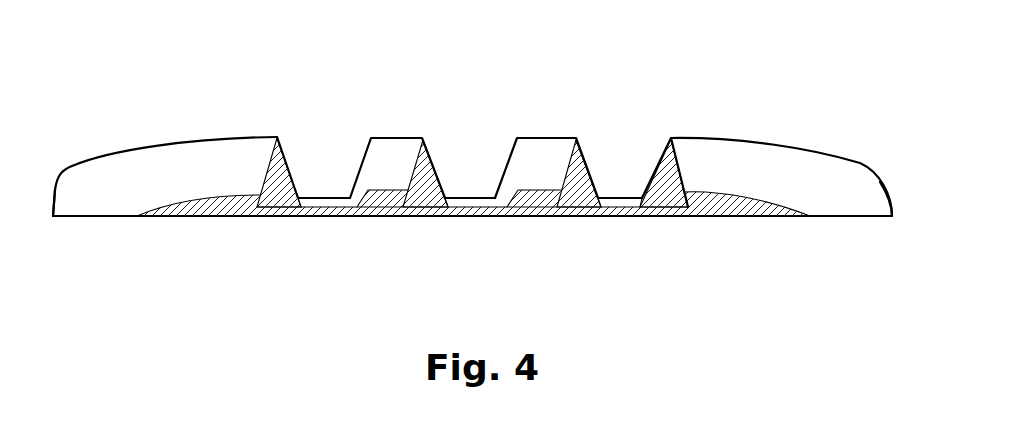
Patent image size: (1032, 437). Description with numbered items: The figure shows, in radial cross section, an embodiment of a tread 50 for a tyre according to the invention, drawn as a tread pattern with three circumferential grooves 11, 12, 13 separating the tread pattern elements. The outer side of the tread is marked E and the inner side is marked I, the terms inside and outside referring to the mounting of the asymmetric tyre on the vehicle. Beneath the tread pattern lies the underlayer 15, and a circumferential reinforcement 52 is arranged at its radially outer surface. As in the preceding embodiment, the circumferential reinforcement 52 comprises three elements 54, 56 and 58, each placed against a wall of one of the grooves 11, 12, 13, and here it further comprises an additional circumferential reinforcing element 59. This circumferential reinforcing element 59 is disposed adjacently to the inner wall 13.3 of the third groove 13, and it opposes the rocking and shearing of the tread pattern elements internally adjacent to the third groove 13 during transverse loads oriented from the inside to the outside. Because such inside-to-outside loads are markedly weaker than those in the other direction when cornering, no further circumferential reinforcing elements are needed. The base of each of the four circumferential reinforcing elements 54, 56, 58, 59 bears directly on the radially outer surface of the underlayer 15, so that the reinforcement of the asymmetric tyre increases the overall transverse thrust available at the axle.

The tread 50 is at (268, 90).
The exterior side E is at (95, 148).
The interior side I is at (845, 148).
The first profile element 11 is at (307, 175).
The second profile element 12 is at (453, 180).
The third groove 13 is at (617, 177).
The inner wall 13.3 is at (653, 170).
The underlayer 15 is at (737, 202).
The circumferential reinforcement 52 is at (442, 279).
The circumferential reinforcing element 54 is at (431, 200).
The circumferential reinforcing element 56 is at (280, 198).
The circumferential reinforcing element 58 is at (580, 202).
The additional circumferential reinforcing element 59 is at (664, 202).